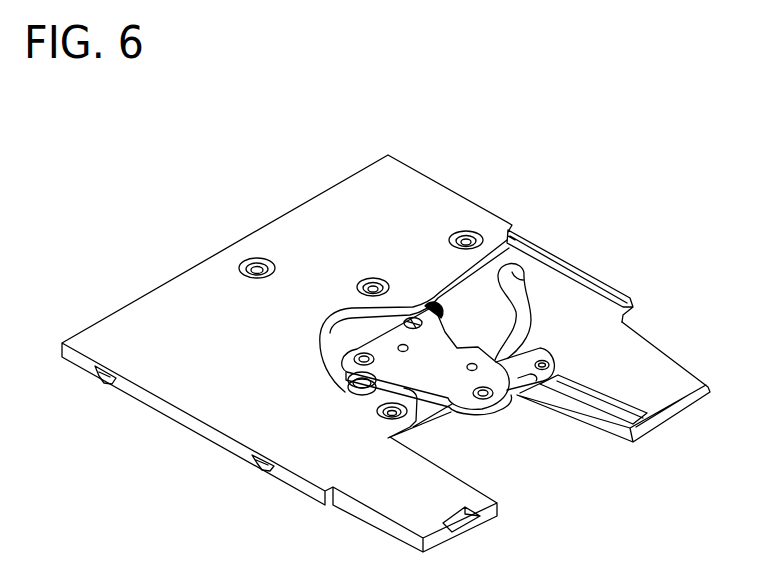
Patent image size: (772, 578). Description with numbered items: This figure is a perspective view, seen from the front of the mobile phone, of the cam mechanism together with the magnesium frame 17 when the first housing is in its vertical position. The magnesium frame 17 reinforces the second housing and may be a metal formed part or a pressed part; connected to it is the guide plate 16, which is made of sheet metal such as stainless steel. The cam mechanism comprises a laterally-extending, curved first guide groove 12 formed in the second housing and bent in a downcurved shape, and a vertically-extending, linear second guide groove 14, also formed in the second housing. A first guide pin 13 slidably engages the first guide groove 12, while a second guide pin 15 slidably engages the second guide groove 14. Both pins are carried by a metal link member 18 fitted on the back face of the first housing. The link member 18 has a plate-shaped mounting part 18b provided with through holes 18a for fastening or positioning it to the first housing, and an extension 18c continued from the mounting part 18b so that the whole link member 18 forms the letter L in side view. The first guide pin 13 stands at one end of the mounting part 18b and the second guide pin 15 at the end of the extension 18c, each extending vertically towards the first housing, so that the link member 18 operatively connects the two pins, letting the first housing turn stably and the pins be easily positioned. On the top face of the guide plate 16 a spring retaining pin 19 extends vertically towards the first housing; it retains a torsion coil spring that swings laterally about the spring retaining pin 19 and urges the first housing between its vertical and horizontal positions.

The first guide groove 12 is at (517, 260).
The first guide pin 13 is at (364, 350).
The second guide groove 14 is at (593, 400).
The second guide pin 15 is at (600, 297).
The guide plate 16 is at (655, 372).
The magnesium frame 17 is at (200, 373).
The link member 18 is at (424, 293).
The through holes 18a is at (484, 350).
The mounting part 18b is at (448, 390).
The extension 18c is at (538, 372).
The spring retaining pin 19 is at (428, 305).